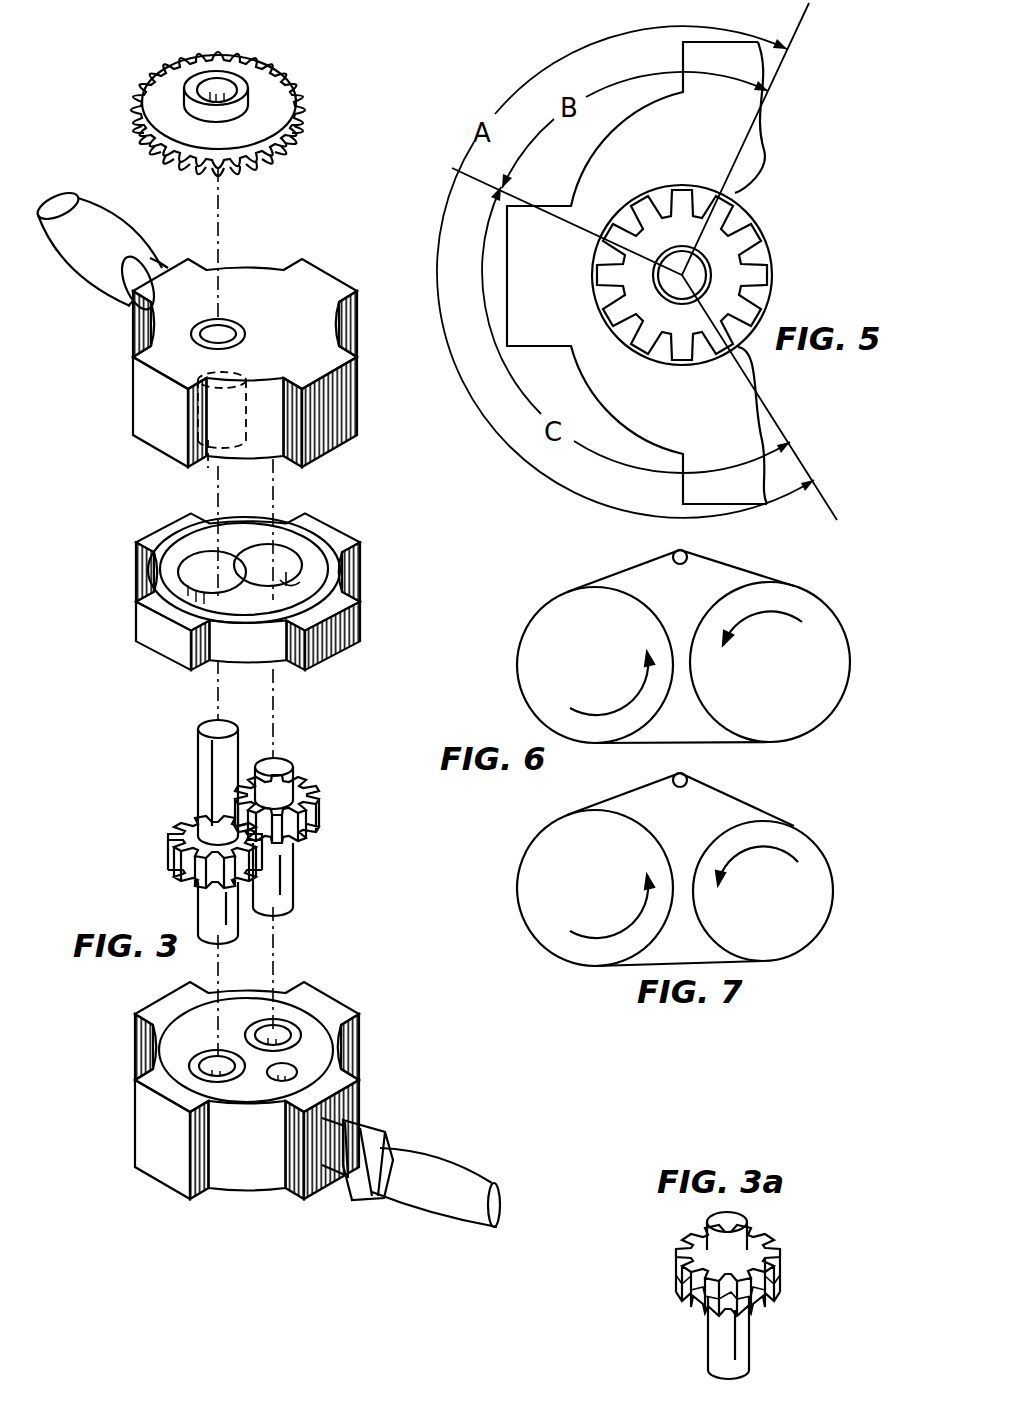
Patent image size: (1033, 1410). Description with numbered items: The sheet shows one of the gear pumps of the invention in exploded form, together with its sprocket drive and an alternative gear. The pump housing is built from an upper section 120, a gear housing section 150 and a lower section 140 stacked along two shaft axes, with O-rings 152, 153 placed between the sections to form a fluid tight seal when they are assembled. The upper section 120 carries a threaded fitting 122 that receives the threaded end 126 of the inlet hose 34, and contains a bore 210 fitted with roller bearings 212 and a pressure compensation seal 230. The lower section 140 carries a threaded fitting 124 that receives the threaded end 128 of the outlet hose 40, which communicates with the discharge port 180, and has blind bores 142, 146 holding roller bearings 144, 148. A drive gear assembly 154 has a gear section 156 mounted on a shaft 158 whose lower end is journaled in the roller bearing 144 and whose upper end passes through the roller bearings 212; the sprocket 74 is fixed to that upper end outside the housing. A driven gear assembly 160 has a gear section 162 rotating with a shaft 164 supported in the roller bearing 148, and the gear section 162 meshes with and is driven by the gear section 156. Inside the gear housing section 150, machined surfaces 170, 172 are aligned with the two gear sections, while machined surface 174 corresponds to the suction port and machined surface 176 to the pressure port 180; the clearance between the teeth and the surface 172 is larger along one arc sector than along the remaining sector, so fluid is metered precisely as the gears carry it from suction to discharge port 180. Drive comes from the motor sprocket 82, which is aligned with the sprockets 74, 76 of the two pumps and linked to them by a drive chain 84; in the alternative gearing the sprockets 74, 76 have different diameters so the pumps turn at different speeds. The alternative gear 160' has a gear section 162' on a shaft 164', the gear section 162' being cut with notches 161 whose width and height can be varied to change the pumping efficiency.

In FIG. 3, the inlet hose 34 is at (62, 257).
In FIG. 3, the outlet hose 40 is at (465, 1180).
In FIG. 3, the sprocket 74 is at (263, 88).
In FIG. 6, the sprocket 74 is at (601, 675).
In FIG. 7, the sprocket 74 is at (601, 898).
In FIG. 6, the sprocket 76 is at (776, 675).
In FIG. 7, the sprocket 76 is at (773, 898).
In FIG. 6, the sprocket 82 is at (683, 564).
In FIG. 7, the sprocket 82 is at (683, 787).
In FIG. 6, the drive chain 84 is at (765, 580).
In FIG. 7, the drive chain 84 is at (765, 810).
In FIG. 3, the upper section 120 is at (133, 408).
In FIG. 3, the threaded fitting 122 is at (124, 316).
In FIG. 3, the threaded fitting 124 is at (364, 1118).
In FIG. 3, the threaded end 126 is at (114, 296).
In FIG. 3, the threaded end 128 is at (396, 1142).
In FIG. 3, the lower section 140 is at (124, 1130).
In FIG. 3, the blind bore 142 is at (215, 1078).
In FIG. 3, the roller bearing 144 is at (200, 1063).
In FIG. 3, the blind bore 146 is at (283, 1017).
In FIG. 3, the roller bearing 148 is at (307, 1027).
In FIG. 3, the gear housing section 150 is at (372, 630).
In FIG. 3, the O-ring 152 is at (134, 624).
In FIG. 3, the O-ring 153 is at (333, 1033).
In FIG. 3, the drive gear assembly 154 is at (171, 878).
In FIG. 3, the gear section 156 is at (171, 828).
In FIG. 3, the shaft 158 is at (198, 762).
In FIG. 3, the driven gear assembly 160 is at (362, 837).
In FIG. 3A, the notches 161 is at (772, 1275).
In FIG. 3, the gear section 162 is at (308, 800).
In FIG. 3, the shaft 164 is at (303, 879).
In FIG. 3, the machined surface 170 is at (180, 580).
In FIG. 3, the machined surface 172 is at (285, 546).
In FIG. 5, the machined surface 172 is at (660, 193).
In FIG. 3, the machined surface 174 is at (220, 545).
In FIG. 3, the machined surface 176 is at (298, 578).
In FIG. 3, the discharge port 180 is at (293, 1070).
In FIG. 3, the bore 210 is at (236, 326).
In FIG. 3, the roller bearings 212 is at (206, 462).
In FIG. 3, the pressure compensation seal 230 is at (243, 338).
In FIG. 3A, the alternative gear 160' is at (616, 1327).
In FIG. 3A, the gear section 162' is at (769, 1264).
In FIG. 3A, the shaft 164' is at (767, 1337).